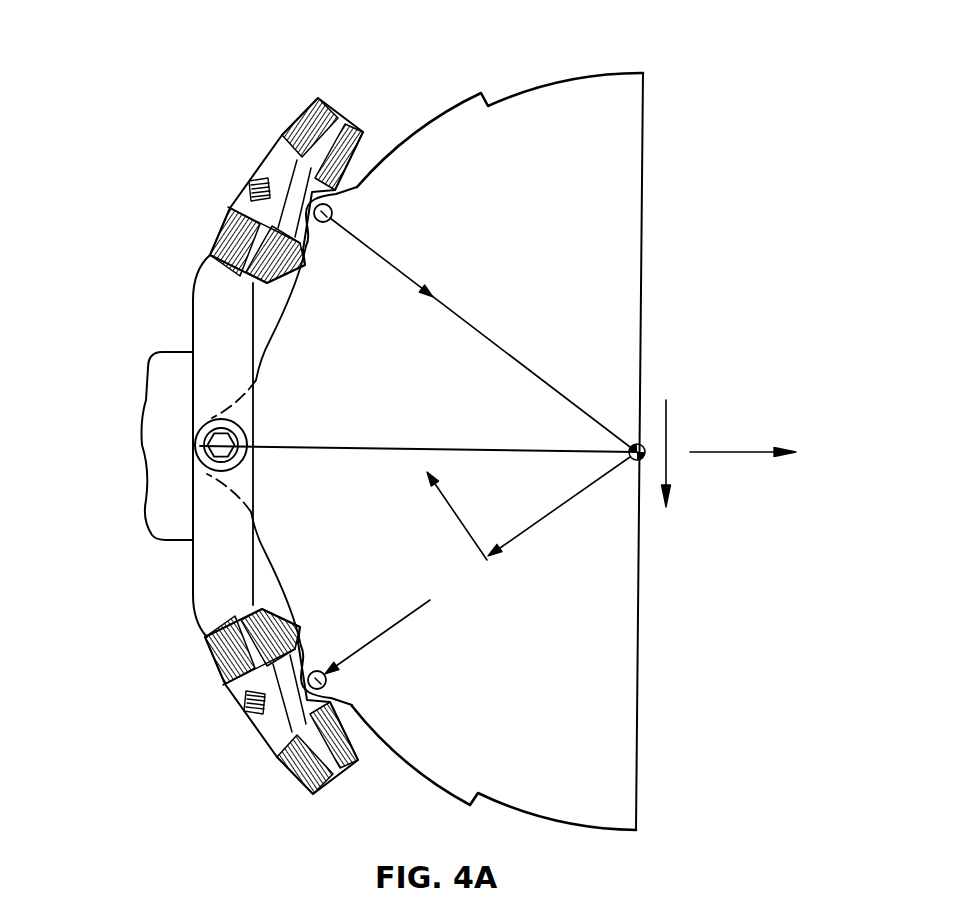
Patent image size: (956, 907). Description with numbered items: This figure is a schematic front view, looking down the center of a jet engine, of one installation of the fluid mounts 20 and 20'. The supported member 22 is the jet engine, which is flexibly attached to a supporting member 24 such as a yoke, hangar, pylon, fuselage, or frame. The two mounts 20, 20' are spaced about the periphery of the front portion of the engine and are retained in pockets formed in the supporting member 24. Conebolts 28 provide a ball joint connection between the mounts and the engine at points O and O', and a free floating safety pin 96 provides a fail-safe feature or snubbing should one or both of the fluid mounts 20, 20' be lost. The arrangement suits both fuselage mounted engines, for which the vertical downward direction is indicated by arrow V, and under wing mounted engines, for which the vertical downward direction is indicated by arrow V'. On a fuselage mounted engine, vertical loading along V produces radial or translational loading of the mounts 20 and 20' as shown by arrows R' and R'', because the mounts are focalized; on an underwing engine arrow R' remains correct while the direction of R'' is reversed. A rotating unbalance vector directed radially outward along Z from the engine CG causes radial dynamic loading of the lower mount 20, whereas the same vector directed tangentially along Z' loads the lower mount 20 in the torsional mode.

The fluid mount 20 is at (241, 705).
The fluid mount 20' is at (249, 186).
The supported member 22 is at (427, 121).
The supporting member 24 is at (162, 410).
The conebolt 28 is at (308, 252).
The free floating safety pin 96 is at (247, 424).
The ball joint connection point O is at (365, 213).
The ball joint connection point O' is at (365, 686).
The radial loading arrow R' is at (480, 332).
The radial loading arrow R'' is at (390, 637).
The radial unbalance direction Z is at (559, 515).
The tangential unbalance direction Z' is at (457, 516).
The vertical downward direction arrow V is at (679, 453).
The vertical downward direction arrow V' is at (743, 434).